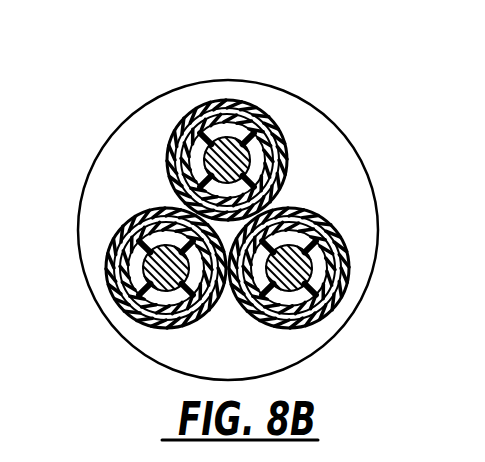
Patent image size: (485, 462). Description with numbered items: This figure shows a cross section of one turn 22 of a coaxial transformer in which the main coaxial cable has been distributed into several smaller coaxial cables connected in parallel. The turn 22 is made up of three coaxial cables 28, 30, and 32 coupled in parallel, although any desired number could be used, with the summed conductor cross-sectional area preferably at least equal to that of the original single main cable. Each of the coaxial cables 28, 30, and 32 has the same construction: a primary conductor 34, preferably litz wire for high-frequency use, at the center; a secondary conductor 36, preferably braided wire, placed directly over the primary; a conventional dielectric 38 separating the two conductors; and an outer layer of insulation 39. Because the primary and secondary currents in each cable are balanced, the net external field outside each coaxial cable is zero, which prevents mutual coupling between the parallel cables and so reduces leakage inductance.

The turn 22 is at (286, 77).
The coaxial cable 28 is at (270, 105).
The coaxial cable 30 is at (125, 315).
The coaxial cable 32 is at (326, 253).
The primary conductor 34 is at (347, 257).
The secondary conductor 36 is at (332, 268).
The dielectric 38 is at (339, 285).
The insulation 39 is at (315, 283).